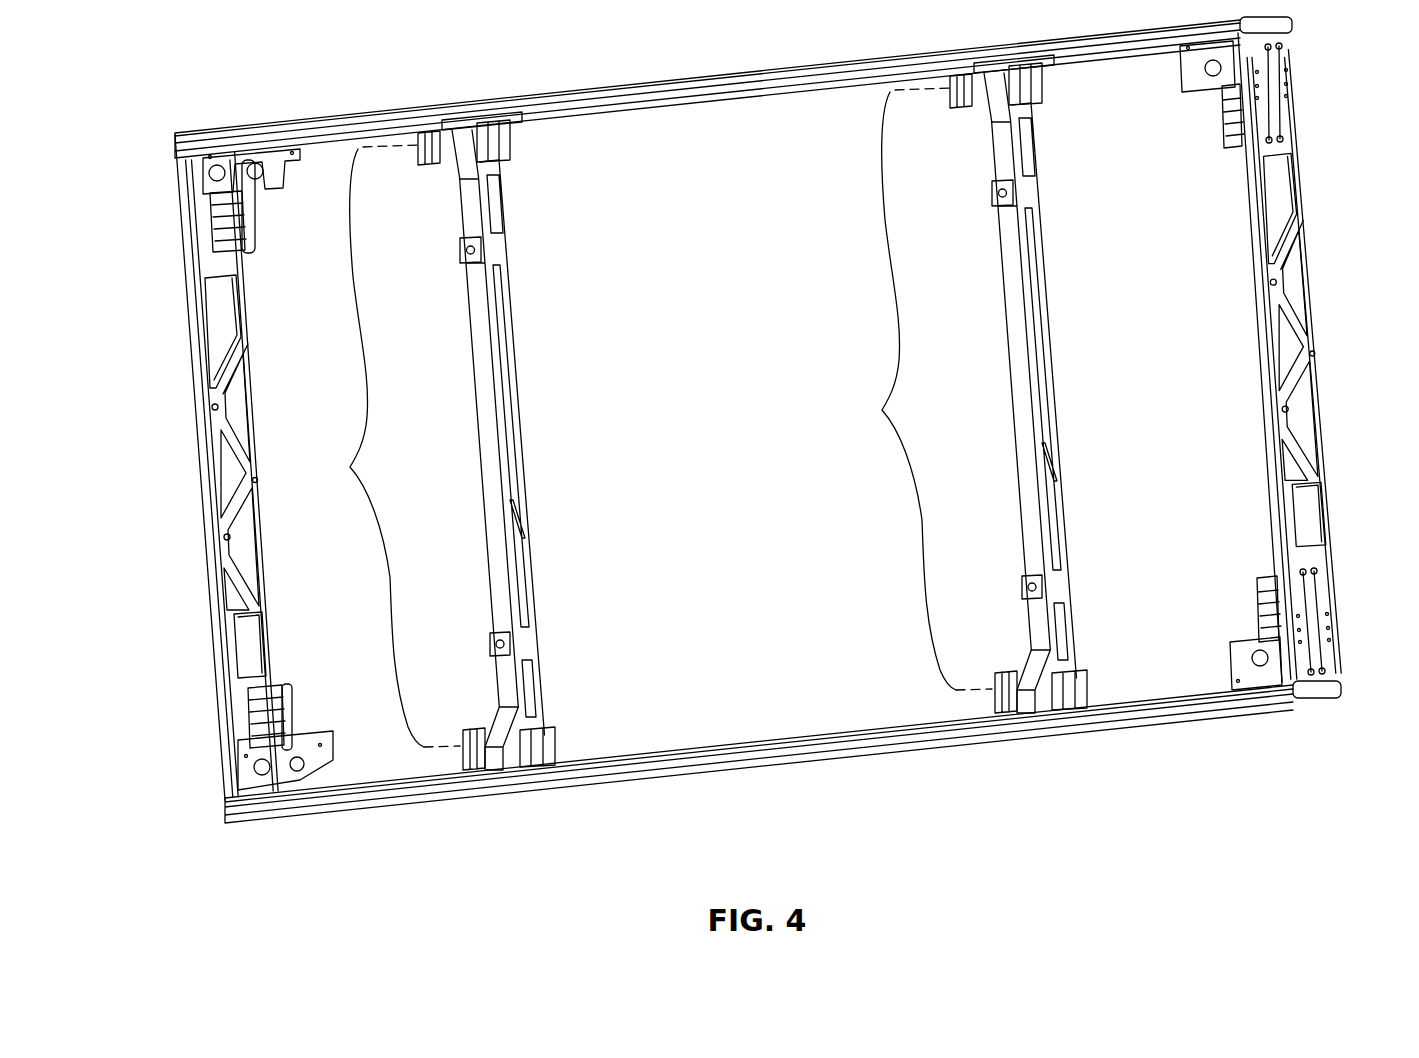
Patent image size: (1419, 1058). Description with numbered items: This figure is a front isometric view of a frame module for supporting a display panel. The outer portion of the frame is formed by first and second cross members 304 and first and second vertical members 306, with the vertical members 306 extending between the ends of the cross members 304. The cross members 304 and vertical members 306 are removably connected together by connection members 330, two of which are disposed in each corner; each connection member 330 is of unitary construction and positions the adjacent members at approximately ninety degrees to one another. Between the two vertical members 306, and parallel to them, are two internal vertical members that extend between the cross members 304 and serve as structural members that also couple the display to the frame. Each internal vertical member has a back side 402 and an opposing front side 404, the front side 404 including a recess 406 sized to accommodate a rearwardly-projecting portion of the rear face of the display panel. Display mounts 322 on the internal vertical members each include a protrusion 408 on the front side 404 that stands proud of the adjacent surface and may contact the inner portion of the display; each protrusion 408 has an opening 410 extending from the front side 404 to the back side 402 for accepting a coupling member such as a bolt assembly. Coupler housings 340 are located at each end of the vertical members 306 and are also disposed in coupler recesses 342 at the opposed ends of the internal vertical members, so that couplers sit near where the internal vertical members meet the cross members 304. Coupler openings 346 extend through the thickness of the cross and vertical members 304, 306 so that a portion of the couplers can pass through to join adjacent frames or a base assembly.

The cross member 304 is at (707, 95).
The vertical member 306 is at (200, 394).
The display mount 322 is at (518, 245).
The connection member 330 is at (278, 165).
The coupler housing 340 is at (556, 748).
The coupler recess 342 is at (498, 168).
The coupler opening 346 is at (1288, 123).
The back side 402 is at (537, 531).
The front side 404 is at (483, 456).
The recess 406 is at (646, 417).
The protrusion 408 is at (461, 258).
The opening 410 is at (463, 248).